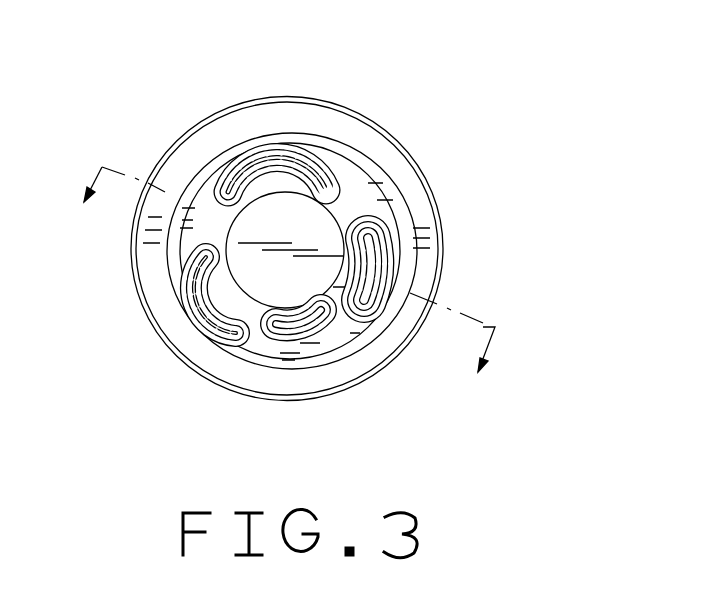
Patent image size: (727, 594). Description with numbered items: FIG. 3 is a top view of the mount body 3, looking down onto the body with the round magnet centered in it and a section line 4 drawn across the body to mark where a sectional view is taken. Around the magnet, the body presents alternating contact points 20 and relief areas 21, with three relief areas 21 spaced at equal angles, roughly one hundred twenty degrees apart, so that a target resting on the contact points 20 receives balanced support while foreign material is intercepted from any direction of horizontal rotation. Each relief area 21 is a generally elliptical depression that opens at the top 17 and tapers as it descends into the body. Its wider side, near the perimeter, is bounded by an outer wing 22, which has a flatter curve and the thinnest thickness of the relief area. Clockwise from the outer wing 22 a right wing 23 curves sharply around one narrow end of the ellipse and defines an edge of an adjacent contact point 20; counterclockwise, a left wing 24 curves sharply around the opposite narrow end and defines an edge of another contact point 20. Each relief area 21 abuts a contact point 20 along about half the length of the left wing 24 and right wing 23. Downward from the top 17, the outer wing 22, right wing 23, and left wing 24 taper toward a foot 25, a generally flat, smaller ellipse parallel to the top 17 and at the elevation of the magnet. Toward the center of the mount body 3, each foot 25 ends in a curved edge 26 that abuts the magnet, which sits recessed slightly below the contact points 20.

The cable 3 is at (132, 235).
The section line 4 is at (280, 285).
The top 17 is at (340, 157).
The contact point 20 is at (358, 181).
The relief area 21 is at (240, 150).
The outer wing 22 is at (263, 157).
The right wing 23 is at (310, 147).
The left wing 24 is at (226, 185).
The foot 25 is at (284, 172).
The curved edge 26 is at (291, 170).